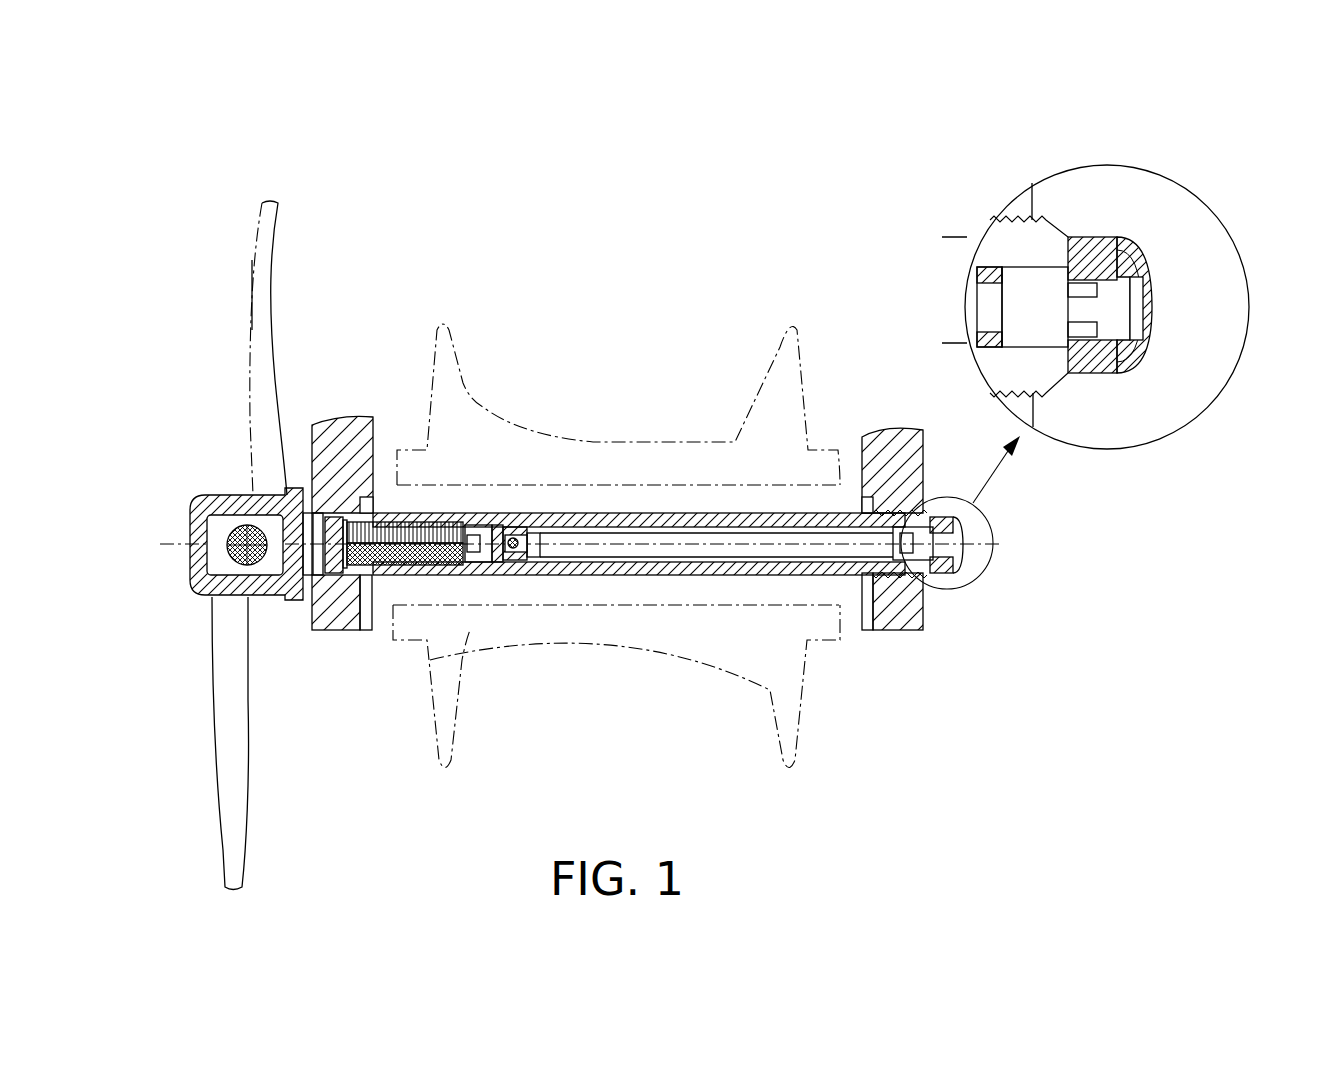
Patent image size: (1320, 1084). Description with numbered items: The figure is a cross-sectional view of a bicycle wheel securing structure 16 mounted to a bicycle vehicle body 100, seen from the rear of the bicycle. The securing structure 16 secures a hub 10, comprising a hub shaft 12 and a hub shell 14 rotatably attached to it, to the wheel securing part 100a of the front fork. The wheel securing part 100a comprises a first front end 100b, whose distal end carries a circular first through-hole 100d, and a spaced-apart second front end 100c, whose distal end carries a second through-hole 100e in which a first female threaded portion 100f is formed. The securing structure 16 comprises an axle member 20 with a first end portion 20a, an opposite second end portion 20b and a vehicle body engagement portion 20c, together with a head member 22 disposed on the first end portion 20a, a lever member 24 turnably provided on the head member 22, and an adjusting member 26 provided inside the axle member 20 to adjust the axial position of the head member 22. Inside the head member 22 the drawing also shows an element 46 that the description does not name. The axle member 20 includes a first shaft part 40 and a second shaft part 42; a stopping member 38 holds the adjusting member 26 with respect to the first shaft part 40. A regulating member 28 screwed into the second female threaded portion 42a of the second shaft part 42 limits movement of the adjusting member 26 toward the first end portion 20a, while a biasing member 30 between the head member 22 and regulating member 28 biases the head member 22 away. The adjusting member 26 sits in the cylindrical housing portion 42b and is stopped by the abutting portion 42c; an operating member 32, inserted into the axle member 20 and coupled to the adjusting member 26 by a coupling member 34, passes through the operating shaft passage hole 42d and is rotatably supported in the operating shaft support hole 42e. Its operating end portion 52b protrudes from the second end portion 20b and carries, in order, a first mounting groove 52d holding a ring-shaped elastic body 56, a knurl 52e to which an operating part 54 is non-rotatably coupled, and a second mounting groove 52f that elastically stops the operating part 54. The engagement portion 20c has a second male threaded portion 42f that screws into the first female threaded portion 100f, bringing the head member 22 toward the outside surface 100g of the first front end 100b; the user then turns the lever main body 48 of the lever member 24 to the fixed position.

The hub 10 is at (428, 327).
The hub shaft 12 is at (718, 432).
The hub shell 14 is at (593, 440).
The bicycle wheel securing structure 16 is at (587, 510).
The axle member 20 is at (450, 335).
The first end portion 20a is at (217, 532).
The second end portion 20b is at (933, 510).
The vehicle body engagement portion 20c is at (905, 585).
The head member 22 is at (215, 480).
The lever member 24 is at (243, 313).
The adjusting member 26 is at (470, 573).
The regulating member 28 is at (383, 578).
The biasing member 30 is at (305, 605).
The operating member 32 is at (735, 570).
The coupling member 34 is at (520, 555).
The stopping member 38 is at (478, 525).
The first shaft part 40 is at (413, 520).
The second shaft part 42 is at (497, 513).
The second female threaded portion 42a is at (457, 567).
The housing portion 42b is at (495, 575).
The abutting portion 42c is at (515, 515).
The operating shaft passage hole 42d is at (613, 560).
The operating shaft support hole 42e is at (850, 578).
The second male threaded portion 42f is at (900, 495).
The cam 46 is at (233, 530).
The lever main body 48 is at (250, 287).
The operating end portion 52b is at (1007, 257).
The first mounting groove 52d is at (977, 345).
The knurl 52e is at (1097, 373).
The second mounting groove 52f is at (1130, 277).
The operating part 54 is at (960, 578).
The ring-shaped elastic body 56 is at (1003, 257).
The bicycle vehicle body 100 is at (863, 397).
The wheel securing part 100a is at (942, 612).
The first front end 100b is at (345, 405).
The second front end 100c is at (960, 603).
The first through-hole 100d is at (348, 578).
The second through-hole 100e is at (905, 440).
The first female threaded portion 100f is at (901, 584).
The outside surface 100g is at (253, 493).